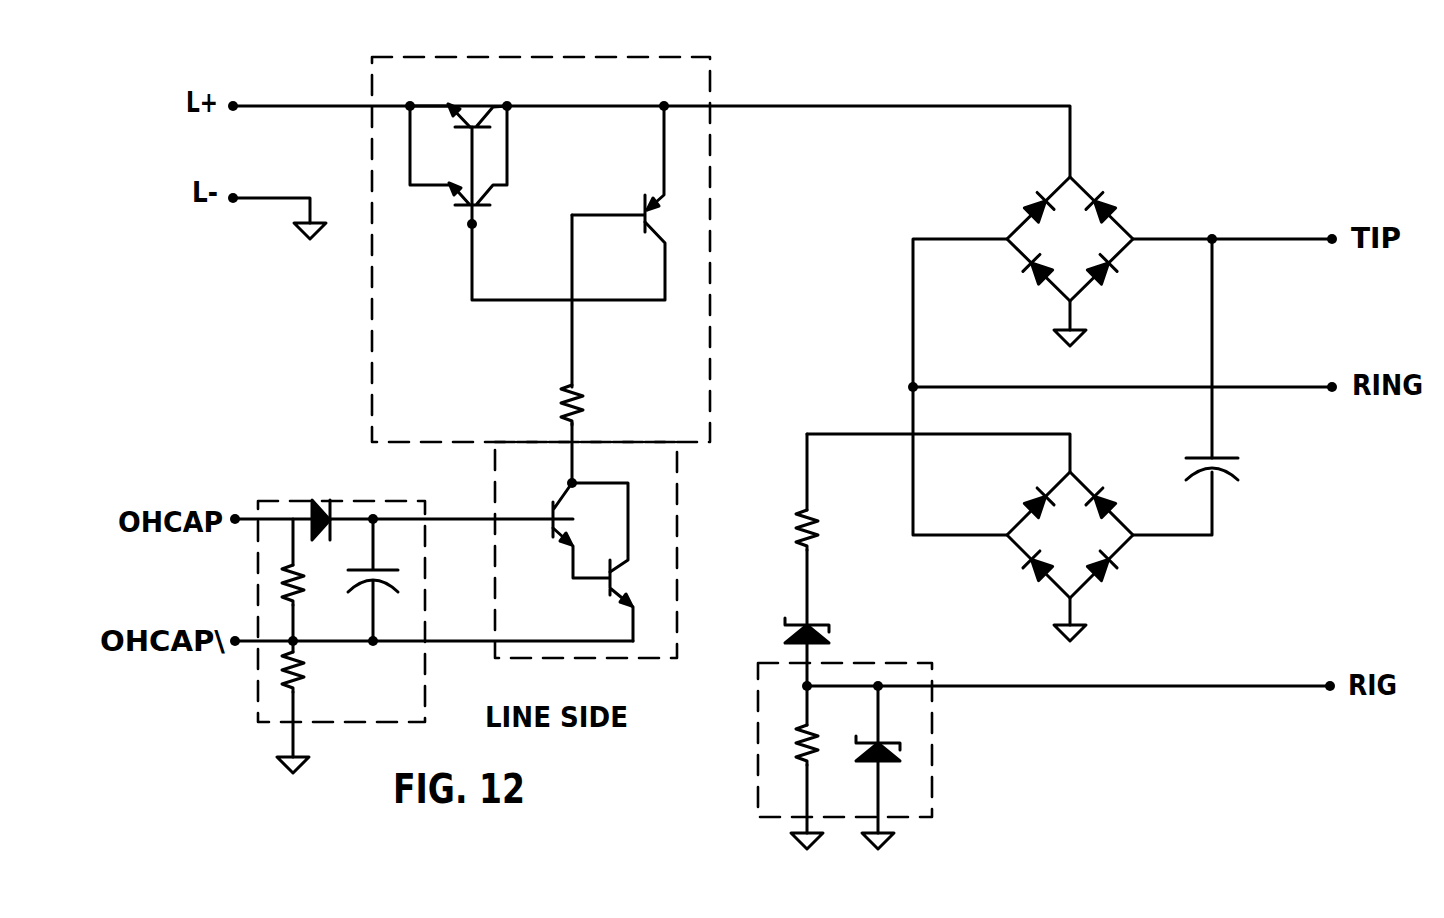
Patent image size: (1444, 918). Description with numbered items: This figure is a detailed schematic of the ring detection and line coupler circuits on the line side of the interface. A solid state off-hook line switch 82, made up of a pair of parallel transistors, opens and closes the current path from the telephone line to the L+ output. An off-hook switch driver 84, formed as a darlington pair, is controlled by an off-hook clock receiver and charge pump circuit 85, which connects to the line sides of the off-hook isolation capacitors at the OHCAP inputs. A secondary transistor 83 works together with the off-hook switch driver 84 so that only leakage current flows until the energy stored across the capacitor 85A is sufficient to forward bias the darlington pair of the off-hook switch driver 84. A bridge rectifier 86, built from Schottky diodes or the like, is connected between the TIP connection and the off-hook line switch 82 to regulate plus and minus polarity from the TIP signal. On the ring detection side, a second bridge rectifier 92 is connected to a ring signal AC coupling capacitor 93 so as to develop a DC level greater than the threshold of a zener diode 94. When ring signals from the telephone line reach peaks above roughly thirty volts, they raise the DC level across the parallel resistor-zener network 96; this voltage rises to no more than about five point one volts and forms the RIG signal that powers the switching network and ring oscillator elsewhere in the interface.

The solid state off-hook line switch 82 is at (457, 366).
The secondary transistor 83 is at (652, 222).
The off-hook switch driver 84 is at (558, 603).
The off-hook clock receiver and charge pump circuit 85 is at (381, 696).
The capacitor 85A is at (387, 570).
The bridge rectifier 86 is at (1070, 203).
The bridge rectifier 92 is at (1113, 540).
The ring signal AC coupling capacitor 93 is at (1235, 465).
The zener diode 94 is at (783, 622).
The parallel resistor-zener network 96 is at (940, 782).